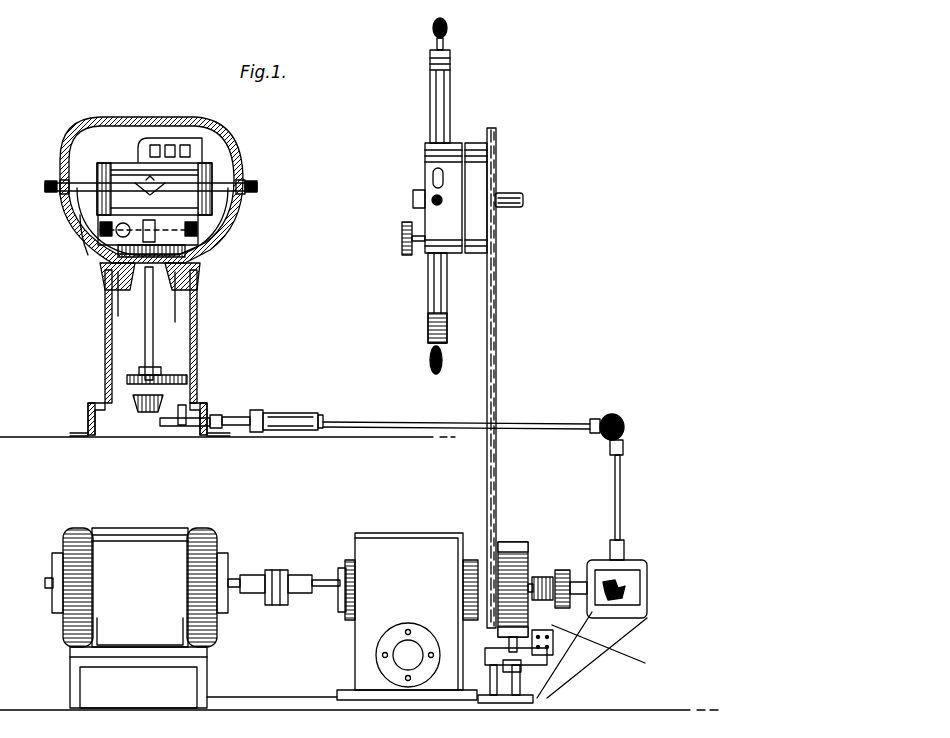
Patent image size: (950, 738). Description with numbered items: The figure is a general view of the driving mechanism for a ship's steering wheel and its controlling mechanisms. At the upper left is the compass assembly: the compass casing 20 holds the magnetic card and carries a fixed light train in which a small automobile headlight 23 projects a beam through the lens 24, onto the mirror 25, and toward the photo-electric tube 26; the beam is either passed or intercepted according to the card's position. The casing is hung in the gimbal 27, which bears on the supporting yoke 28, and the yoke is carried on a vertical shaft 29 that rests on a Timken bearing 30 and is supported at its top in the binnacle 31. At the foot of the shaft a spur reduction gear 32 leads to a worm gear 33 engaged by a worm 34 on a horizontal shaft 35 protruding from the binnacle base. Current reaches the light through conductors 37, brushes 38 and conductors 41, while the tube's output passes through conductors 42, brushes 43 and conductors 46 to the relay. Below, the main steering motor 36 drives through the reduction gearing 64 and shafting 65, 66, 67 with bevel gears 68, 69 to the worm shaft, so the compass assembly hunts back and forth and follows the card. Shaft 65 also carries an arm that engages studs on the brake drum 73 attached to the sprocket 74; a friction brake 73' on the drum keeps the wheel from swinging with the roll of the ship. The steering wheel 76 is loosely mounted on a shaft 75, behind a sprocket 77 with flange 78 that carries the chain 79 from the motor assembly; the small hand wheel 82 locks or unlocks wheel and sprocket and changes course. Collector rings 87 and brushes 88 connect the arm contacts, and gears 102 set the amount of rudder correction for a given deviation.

The compass casing 20 is at (100, 176).
The small automobile headlight 23 is at (116, 228).
The lens 24 is at (150, 220).
The mirror 25 is at (190, 250).
The photo-electric tube 26 is at (188, 150).
The gimbal 27 is at (95, 185).
The supporting yoke 28 is at (98, 228).
The vertical shaft 29 is at (143, 335).
The Timken bearing 30 is at (148, 432).
The binnacle 31 is at (245, 166).
The spur reduction gear 32 is at (130, 375).
The worm gear 33 is at (196, 428).
The worm 34 is at (196, 408).
The horizontal shaft 35 is at (242, 416).
The main steering motor 36 is at (86, 526).
The conductors 37 is at (118, 298).
The brushes 38 is at (106, 270).
The conductors 41 is at (88, 253).
The conductors 42 is at (236, 140).
The brushes 43 is at (195, 270).
The conductors 46 is at (177, 312).
The reduction gearing 64 is at (407, 616).
The shaft 65 is at (588, 580).
The shaft 66 is at (628, 507).
The shaft 67 is at (405, 414).
The bevel gear 68 is at (626, 588).
The bevel gear 69 is at (622, 428).
The brake drum 73 is at (518, 581).
The friction brake 73' is at (592, 658).
The sprocket 74 is at (481, 622).
The shaft 75 is at (515, 194).
The steering wheel 76 is at (431, 74).
The sprocket 77 is at (497, 160).
The flange 78 is at (475, 141).
The chain 79 is at (496, 385).
The small hand wheel 82 is at (401, 240).
The collector rings 87 is at (543, 577).
The brushes 88 is at (558, 633).
The gears 102 is at (594, 612).